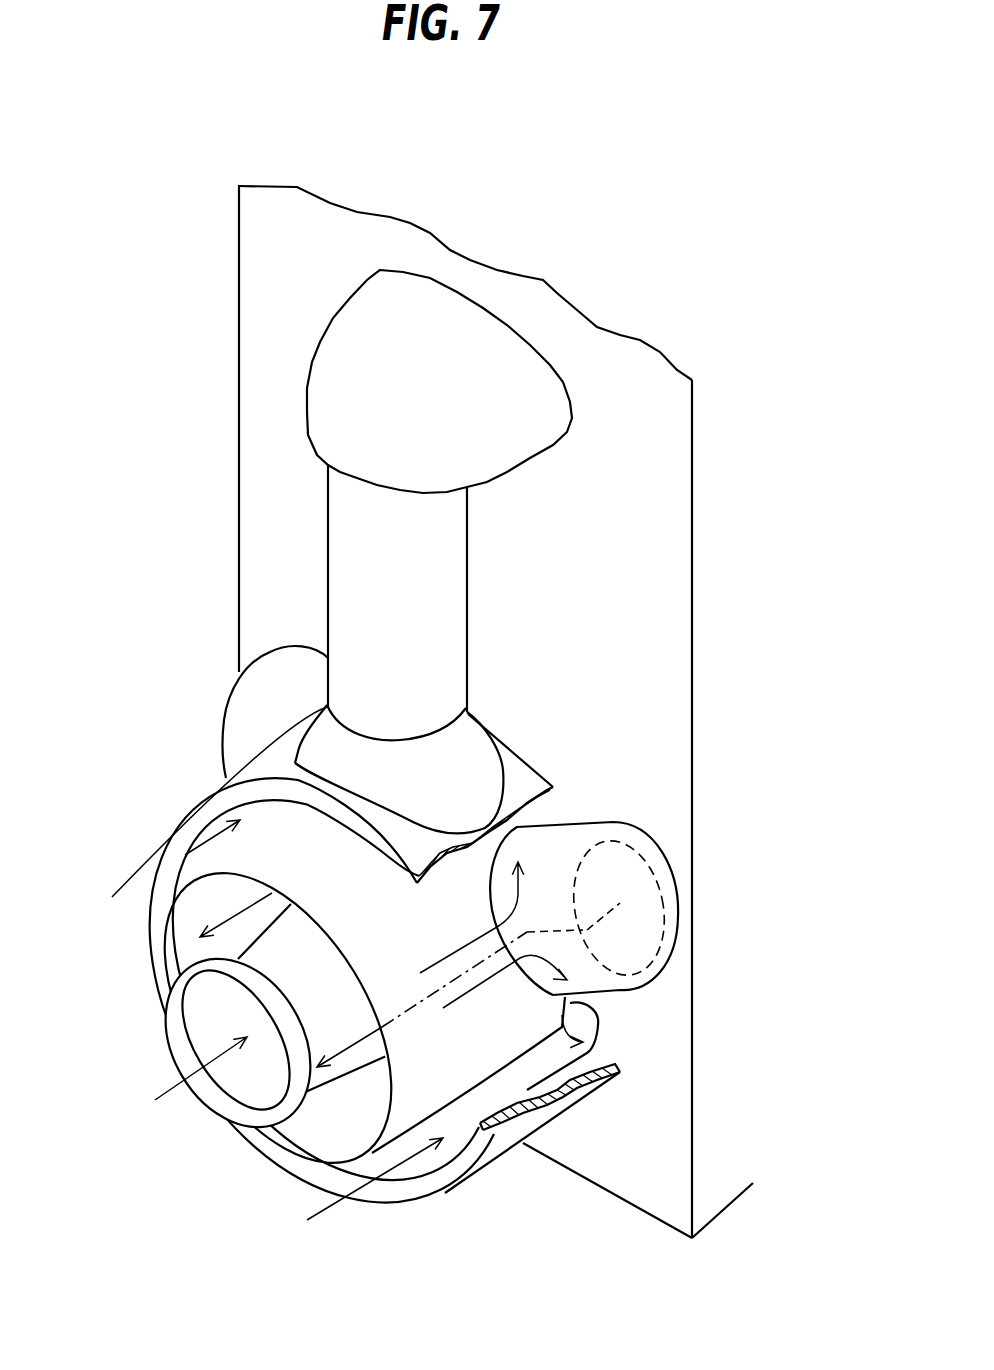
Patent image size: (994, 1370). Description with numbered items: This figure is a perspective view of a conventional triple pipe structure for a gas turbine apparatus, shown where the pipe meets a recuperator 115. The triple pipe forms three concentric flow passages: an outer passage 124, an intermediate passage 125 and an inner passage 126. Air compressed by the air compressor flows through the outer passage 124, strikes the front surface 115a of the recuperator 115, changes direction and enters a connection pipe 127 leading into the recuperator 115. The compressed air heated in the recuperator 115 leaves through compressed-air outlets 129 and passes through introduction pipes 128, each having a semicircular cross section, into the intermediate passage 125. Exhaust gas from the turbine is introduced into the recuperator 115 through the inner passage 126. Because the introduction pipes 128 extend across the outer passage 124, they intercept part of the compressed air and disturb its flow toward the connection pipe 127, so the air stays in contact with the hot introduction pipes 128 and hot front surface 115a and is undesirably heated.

The recuperator 115 is at (704, 529).
The front surface 115a is at (630, 1178).
The outer passage 124 is at (203, 800).
The intermediate passage 125 is at (187, 920).
The inner passage 126 is at (203, 1027).
The connection pipe 127 is at (327, 512).
The introduction pipes 128 is at (583, 830).
The compressed-air outlets 129 is at (663, 907).